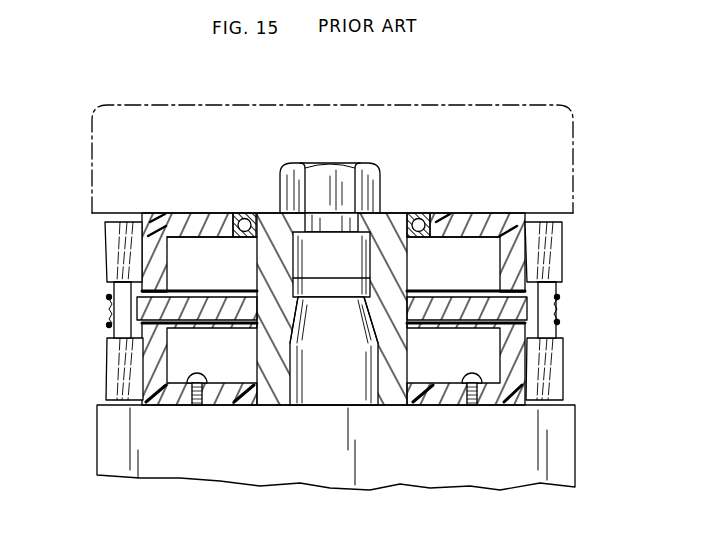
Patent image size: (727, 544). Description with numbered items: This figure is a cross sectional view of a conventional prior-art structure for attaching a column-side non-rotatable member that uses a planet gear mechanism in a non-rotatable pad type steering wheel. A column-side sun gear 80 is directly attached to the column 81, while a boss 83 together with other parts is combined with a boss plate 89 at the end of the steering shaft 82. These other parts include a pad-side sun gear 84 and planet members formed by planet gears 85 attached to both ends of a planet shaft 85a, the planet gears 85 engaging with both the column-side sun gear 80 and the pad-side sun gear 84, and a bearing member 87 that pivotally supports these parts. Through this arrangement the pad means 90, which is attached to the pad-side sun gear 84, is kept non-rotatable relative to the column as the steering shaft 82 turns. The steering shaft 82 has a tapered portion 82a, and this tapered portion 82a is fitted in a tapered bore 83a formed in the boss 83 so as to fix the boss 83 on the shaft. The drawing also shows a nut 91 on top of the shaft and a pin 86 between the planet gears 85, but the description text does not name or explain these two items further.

The column-side sun gear 80 is at (168, 366).
The column 81 is at (101, 437).
The steering shaft 82 is at (307, 408).
The tapered portion 82a is at (370, 318).
The boss 83 is at (391, 215).
The tapered bore 83a is at (296, 320).
The pad-side sun gear 84 is at (167, 263).
The planet gears 85 is at (104, 250).
The planet shaft 85a is at (110, 292).
The guide pin 86 is at (110, 357).
The bearing member 87 is at (108, 325).
The boss plate 89 is at (218, 307).
The pad means 90 is at (345, 105).
The nut 91 is at (369, 165).